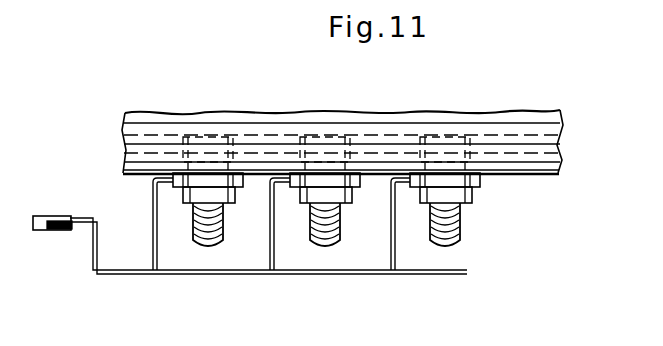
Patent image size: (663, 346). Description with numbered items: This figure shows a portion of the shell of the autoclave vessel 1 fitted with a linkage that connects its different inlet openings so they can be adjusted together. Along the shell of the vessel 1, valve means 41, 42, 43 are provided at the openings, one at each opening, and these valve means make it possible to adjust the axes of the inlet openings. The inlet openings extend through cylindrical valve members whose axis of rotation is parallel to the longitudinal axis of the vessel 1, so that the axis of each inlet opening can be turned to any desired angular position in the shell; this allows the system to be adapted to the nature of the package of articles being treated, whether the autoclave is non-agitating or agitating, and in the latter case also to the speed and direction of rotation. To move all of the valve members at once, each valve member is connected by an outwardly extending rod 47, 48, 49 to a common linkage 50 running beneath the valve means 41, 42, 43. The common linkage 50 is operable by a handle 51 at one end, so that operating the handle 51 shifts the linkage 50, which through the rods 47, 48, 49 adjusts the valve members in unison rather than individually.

The vessel 1 is at (526, 163).
The valve means 41 is at (237, 181).
The valve means 42 is at (352, 184).
The valve means 43 is at (472, 184).
The rod 47 is at (152, 228).
The rod 48 is at (269, 228).
The rod 49 is at (389, 226).
The common linkage 50 is at (201, 276).
The handle 51 is at (55, 231).